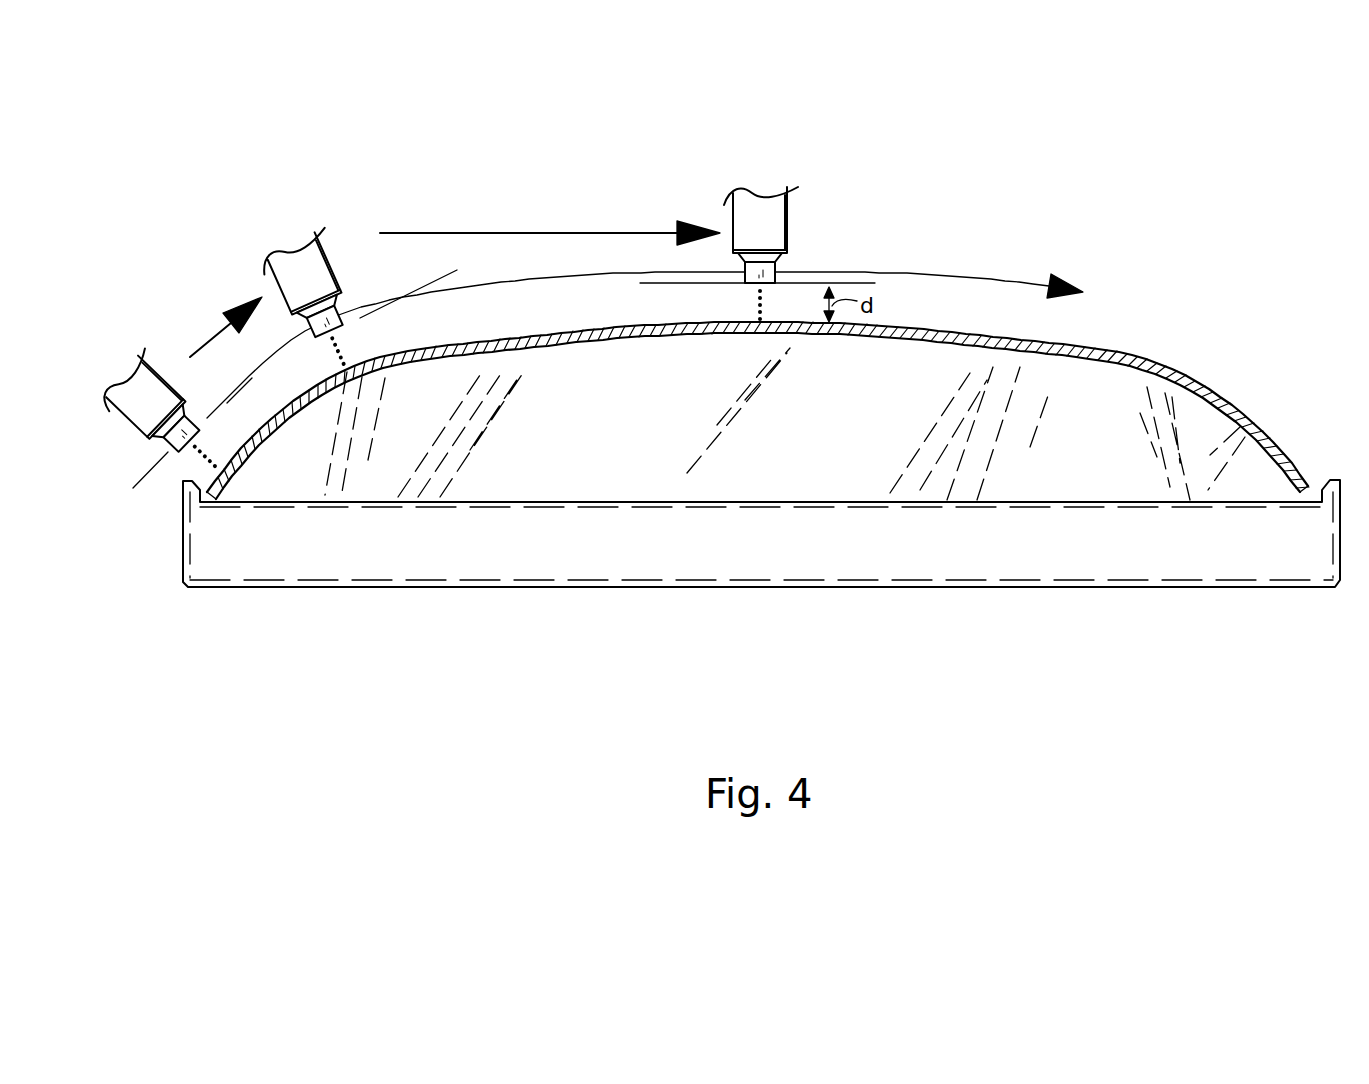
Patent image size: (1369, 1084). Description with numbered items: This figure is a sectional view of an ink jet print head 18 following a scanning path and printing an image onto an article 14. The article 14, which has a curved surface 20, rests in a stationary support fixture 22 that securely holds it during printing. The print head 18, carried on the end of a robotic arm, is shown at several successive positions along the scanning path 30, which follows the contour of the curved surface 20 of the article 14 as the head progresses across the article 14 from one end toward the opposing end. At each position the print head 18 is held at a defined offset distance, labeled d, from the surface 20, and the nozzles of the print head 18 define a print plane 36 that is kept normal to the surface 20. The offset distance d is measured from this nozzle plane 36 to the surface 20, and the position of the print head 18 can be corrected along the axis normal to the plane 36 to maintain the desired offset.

The article 14 is at (758, 388).
The ink jet print head 18 is at (167, 447).
The curved surface 20 is at (1062, 335).
The stationary support fixture 22 is at (335, 570).
The scanning paths 30 is at (970, 280).
The print plane 36 is at (440, 283).